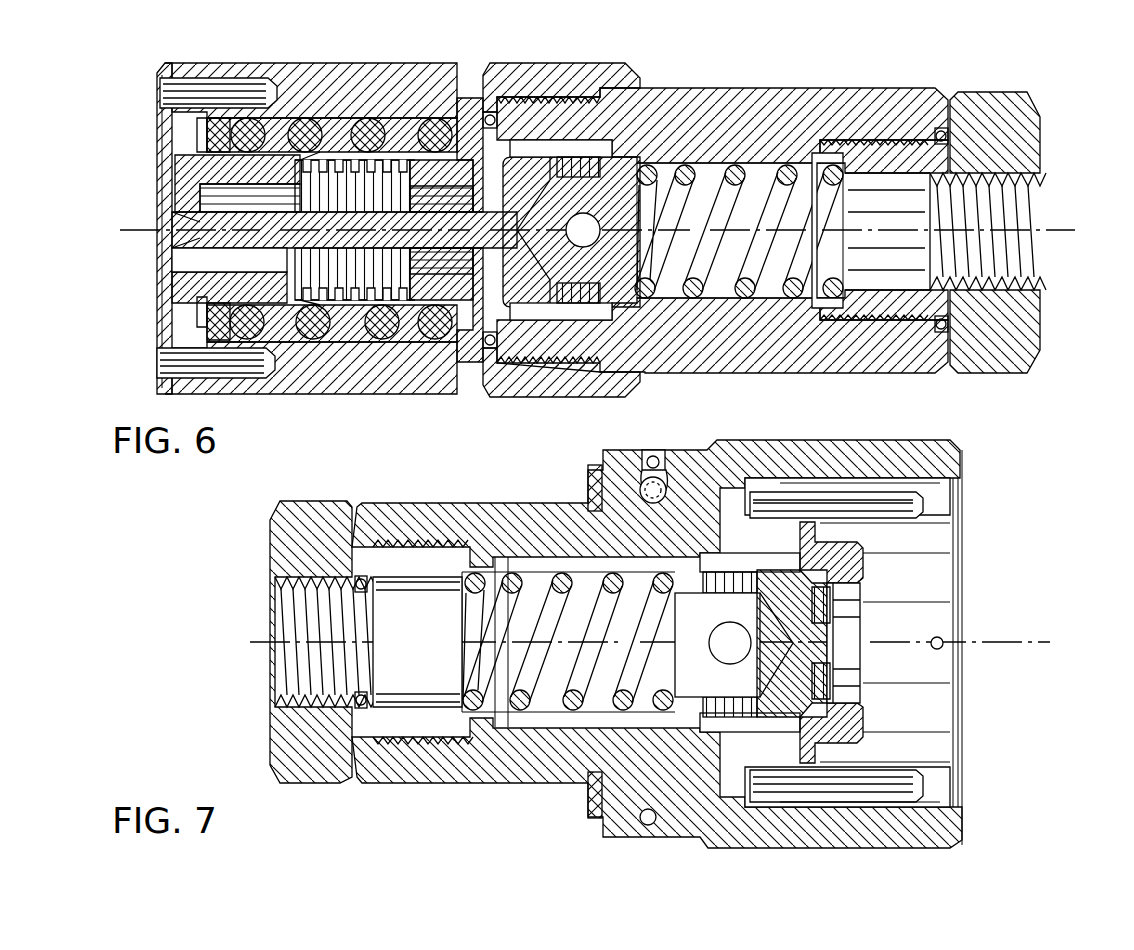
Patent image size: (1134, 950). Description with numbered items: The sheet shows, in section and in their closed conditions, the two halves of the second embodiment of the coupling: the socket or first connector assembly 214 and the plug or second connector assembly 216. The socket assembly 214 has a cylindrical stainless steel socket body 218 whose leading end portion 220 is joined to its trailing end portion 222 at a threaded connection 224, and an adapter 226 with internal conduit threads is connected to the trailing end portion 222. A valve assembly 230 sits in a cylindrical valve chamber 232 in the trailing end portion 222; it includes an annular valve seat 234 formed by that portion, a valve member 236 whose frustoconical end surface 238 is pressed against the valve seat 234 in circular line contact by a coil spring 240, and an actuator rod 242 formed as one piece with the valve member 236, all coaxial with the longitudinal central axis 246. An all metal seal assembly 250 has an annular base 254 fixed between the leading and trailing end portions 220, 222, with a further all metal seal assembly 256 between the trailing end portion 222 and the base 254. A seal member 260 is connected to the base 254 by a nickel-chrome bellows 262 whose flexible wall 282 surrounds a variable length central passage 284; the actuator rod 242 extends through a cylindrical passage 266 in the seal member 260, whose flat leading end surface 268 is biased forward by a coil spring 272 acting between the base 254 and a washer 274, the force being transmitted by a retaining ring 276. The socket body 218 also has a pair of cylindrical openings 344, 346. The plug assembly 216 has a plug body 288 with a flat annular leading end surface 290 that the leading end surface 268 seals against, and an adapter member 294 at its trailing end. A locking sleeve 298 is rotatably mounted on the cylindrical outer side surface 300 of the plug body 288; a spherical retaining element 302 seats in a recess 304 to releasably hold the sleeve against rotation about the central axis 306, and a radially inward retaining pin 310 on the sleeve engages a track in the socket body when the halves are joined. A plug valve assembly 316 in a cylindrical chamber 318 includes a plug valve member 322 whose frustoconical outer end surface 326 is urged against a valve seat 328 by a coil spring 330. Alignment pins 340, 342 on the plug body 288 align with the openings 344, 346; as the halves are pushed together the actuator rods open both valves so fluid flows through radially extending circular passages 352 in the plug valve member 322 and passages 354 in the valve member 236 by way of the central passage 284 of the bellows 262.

In FIG. 6, the socket or first connector assembly 214 is at (682, 42).
In FIG. 6, the socket body 218 is at (775, 83).
In FIG. 6, the leading end portion 220 is at (380, 85).
In FIG. 6, the trailing end portion 222 is at (928, 95).
In FIG. 6, the threaded connection 224 is at (537, 88).
In FIG. 6, the adapter 226 is at (1011, 321).
In FIG. 6, the valve assembly 230 is at (672, 143).
In FIG. 6, the cylindrical valve chamber 232 is at (560, 140).
In FIG. 6, the annular valve seat 234 is at (490, 302).
In FIG. 6, the valve member 236 is at (752, 316).
In FIG. 6, the frustoconical end surface 238 is at (525, 334).
In FIG. 6, the coil spring 240 is at (813, 278).
In FIG. 6, the actuator rod 242 is at (172, 217).
In FIG. 6, the longitudinal central axis 246 is at (1060, 213).
In FIG. 6, the all metal seal assembly 250 is at (308, 125).
In FIG. 6, the annular base 254 is at (468, 95).
In FIG. 6, the all metal seal assembly 256 is at (460, 342).
In FIG. 6, the seal member 260 is at (172, 176).
In FIG. 6, the bellows 262 is at (350, 305).
In FIG. 6, the cylindrical passage 266 is at (227, 270).
In FIG. 6, the leading end surface 268 is at (200, 302).
In FIG. 6, the coil spring 272 is at (295, 341).
In FIG. 6, the annular washer 274 is at (200, 330).
In FIG. 6, the retaining ring 276 is at (210, 306).
In FIG. 6, the flexible wall 282 is at (395, 340).
In FIG. 6, the central passage 284 is at (346, 180).
In FIG. 6, the cylindrical opening 344 is at (235, 356).
In FIG. 6, the cylindrical opening 346 is at (188, 90).
In FIG. 6, the radially extending circular passages 354 is at (583, 247).
In FIG. 7, the plug or second connector assembly 216 is at (258, 588).
In FIG. 7, the plug body 288 is at (528, 500).
In FIG. 7, the leading end surface 290 is at (899, 532).
In FIG. 7, the adapter member 294 is at (296, 748).
In FIG. 7, the locking sleeve 298 is at (933, 450).
In FIG. 7, the cylindrical outer side surface 300 is at (501, 781).
In FIG. 7, the spherical retaining element 302 is at (656, 484).
In FIG. 7, the detent or recess 304 is at (617, 481).
In FIG. 7, the central axis 306 is at (998, 638).
In FIG. 7, the retaining pin 310 is at (956, 644).
In FIG. 7, the plug valve assembly 316 is at (560, 737).
In FIG. 7, the cylindrical chamber 318 is at (500, 560).
In FIG. 7, the plug valve member 322 is at (864, 594).
In FIG. 7, the frustoconical outer end surface 326 is at (860, 712).
In FIG. 7, the valve seat 328 is at (858, 725).
In FIG. 7, the coil spring 330 is at (470, 723).
In FIG. 7, the alignment pin 340 is at (845, 785).
In FIG. 7, the alignment pin 342 is at (872, 492).
In FIG. 7, the radially extending circular passages 352 is at (733, 657).